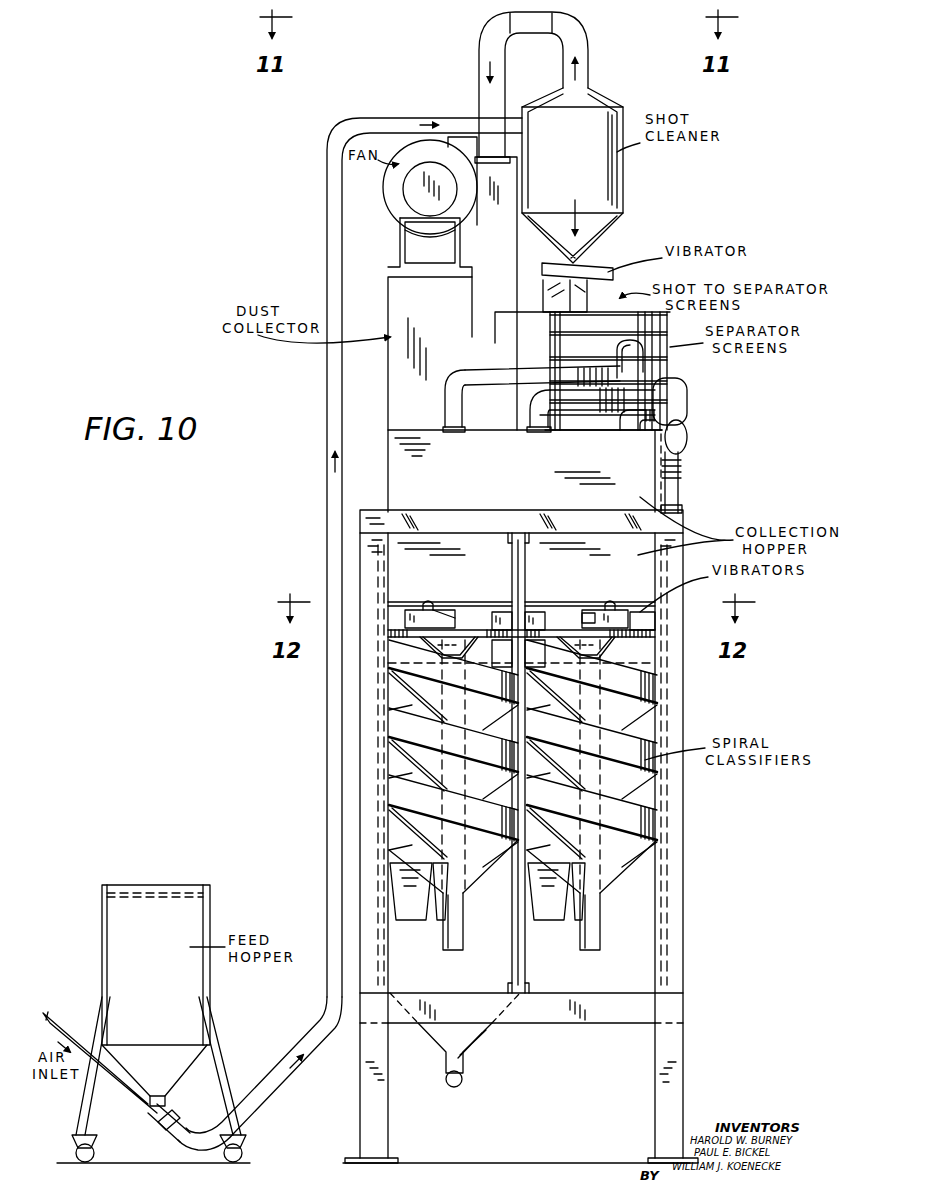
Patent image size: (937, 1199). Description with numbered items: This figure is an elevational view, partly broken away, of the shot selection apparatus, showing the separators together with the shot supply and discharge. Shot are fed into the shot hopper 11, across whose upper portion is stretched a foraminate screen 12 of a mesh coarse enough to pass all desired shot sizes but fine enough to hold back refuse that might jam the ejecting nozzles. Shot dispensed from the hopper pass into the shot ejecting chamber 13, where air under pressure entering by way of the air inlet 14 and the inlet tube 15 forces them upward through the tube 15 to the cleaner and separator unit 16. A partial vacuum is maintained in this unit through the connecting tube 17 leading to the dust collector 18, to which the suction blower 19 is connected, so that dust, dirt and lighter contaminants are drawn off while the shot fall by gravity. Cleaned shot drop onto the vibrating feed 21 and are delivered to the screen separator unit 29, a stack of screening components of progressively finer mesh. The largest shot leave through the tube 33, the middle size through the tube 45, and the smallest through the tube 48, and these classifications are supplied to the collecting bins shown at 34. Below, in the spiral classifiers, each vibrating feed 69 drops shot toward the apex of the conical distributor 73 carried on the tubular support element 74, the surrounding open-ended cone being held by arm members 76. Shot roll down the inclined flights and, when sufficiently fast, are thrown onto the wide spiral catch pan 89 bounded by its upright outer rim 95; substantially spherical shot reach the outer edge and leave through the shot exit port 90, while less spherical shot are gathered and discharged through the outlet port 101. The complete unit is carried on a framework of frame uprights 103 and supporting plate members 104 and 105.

The shot hopper 11 is at (205, 920).
The foraminate screen 12 is at (165, 885).
The shot ejecting chamber 13 is at (150, 1114).
The air inlet pipe 14 is at (62, 1010).
The inlet tube 15 is at (326, 256).
The cleaner and separator unit 16 is at (600, 193).
The connecting tube 17 is at (576, 34).
The dust collector 18 is at (500, 254).
The suction blower 19 is at (412, 188).
The vibrating feed 21 is at (602, 263).
The screen separator unit 29 is at (677, 360).
The tube 33 is at (478, 372).
The feed hopper 34 is at (388, 457).
The tube 45 is at (607, 405).
The tube 48 is at (690, 410).
The vibrating feed 69 is at (420, 612).
The conical distributor 73 is at (460, 638).
The support element 74 is at (463, 913).
The arm members 76 is at (474, 633).
The catch pan 89 is at (395, 762).
The shot exit port 90 is at (412, 905).
The outer rim 95 is at (395, 715).
The outlet port 101 is at (442, 920).
The frame uprights 103 is at (388, 1104).
The supporting plate member 104 is at (537, 1017).
The supporting plate member 105 is at (486, 510).